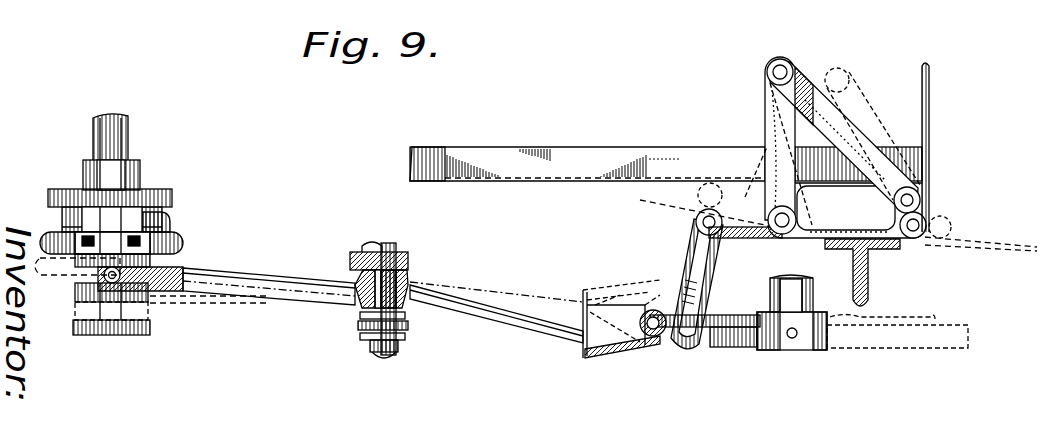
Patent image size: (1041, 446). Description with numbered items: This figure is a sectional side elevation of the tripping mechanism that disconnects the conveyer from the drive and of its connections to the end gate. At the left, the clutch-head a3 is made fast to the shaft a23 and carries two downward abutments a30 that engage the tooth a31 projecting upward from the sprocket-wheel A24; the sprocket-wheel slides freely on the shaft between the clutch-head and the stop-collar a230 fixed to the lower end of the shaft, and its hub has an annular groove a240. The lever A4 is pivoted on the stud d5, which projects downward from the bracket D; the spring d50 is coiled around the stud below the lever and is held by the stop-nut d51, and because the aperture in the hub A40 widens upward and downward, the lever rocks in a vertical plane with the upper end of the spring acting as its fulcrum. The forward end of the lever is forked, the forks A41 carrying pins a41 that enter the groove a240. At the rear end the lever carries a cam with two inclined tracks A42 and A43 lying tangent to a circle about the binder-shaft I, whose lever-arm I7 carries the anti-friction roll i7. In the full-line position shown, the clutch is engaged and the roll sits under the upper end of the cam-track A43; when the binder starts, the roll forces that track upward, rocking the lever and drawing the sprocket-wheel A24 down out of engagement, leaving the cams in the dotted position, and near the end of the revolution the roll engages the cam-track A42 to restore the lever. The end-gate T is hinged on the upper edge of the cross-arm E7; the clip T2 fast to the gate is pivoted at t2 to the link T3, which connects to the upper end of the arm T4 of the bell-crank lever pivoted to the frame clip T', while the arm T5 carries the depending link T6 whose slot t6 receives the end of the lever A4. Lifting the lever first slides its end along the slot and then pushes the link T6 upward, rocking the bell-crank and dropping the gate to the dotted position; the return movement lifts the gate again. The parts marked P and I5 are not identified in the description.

The shaft a23 is at (118, 138).
The clutch-head a3 is at (136, 184).
The abutments a30 is at (165, 200).
The tooth a31 is at (162, 225).
The sprocket-wheel A24 is at (183, 242).
The annular groove a240 is at (95, 279).
The pins a41 is at (113, 281).
The forks A41 is at (160, 285).
The stop-collar a230 is at (85, 332).
The lever A4 is at (280, 284).
The bracket D is at (408, 258).
The stud d5 is at (400, 270).
The hub A40 is at (355, 300).
The spring d50 is at (390, 325).
The stop-nut d51 is at (394, 351).
The bar P is at (666, 148).
The cam-track A43 is at (649, 290).
The cam-track A42 is at (625, 355).
The link T6 is at (700, 247).
The slot t6 is at (705, 302).
The anti-friction roll i7 is at (652, 336).
The lever-arm I7 is at (737, 344).
The slide block I5 is at (770, 333).
The binder-shaft I is at (780, 295).
The cross-arm E7 is at (868, 276).
The clip T' is at (847, 210).
The bell-crank arm T5 is at (752, 222).
The bell-crank arm T4 is at (777, 98).
The link T3 is at (794, 102).
The pivot t2 is at (914, 196).
The clip T2 is at (922, 217).
The end-gate T is at (935, 147).